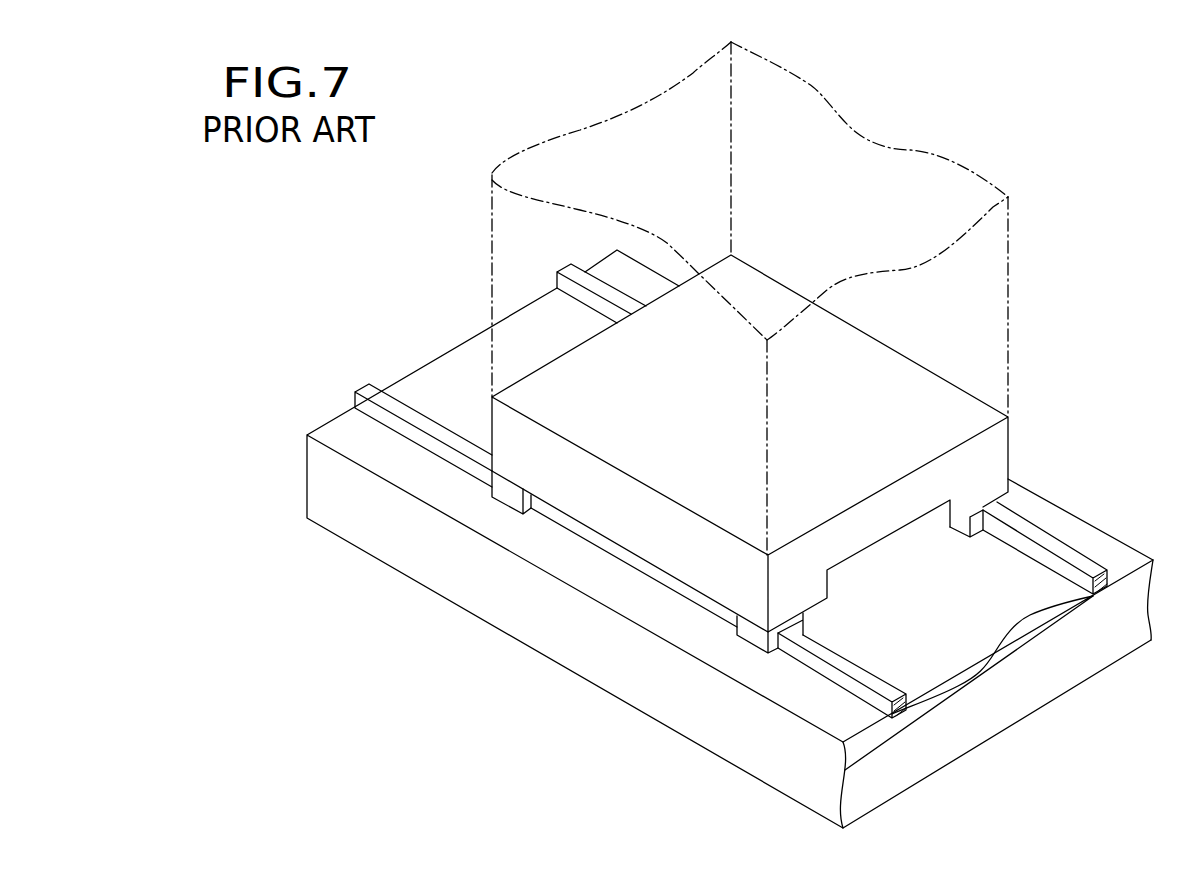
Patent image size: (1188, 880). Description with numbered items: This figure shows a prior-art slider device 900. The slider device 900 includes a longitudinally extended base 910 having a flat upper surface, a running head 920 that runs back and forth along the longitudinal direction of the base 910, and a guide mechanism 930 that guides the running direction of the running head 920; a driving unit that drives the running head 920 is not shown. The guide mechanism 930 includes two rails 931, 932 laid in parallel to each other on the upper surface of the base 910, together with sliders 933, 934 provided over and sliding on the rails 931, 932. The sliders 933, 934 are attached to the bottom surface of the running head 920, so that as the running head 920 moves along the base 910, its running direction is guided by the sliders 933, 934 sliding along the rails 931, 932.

The slider device 900 is at (1098, 237).
The base 910 is at (1110, 653).
The running head 920 is at (993, 462).
The guide mechanism 930 is at (1067, 533).
The rail 931 is at (1035, 555).
The rail 932 is at (877, 676).
The slider 933 is at (965, 532).
The slider 934 is at (508, 497).